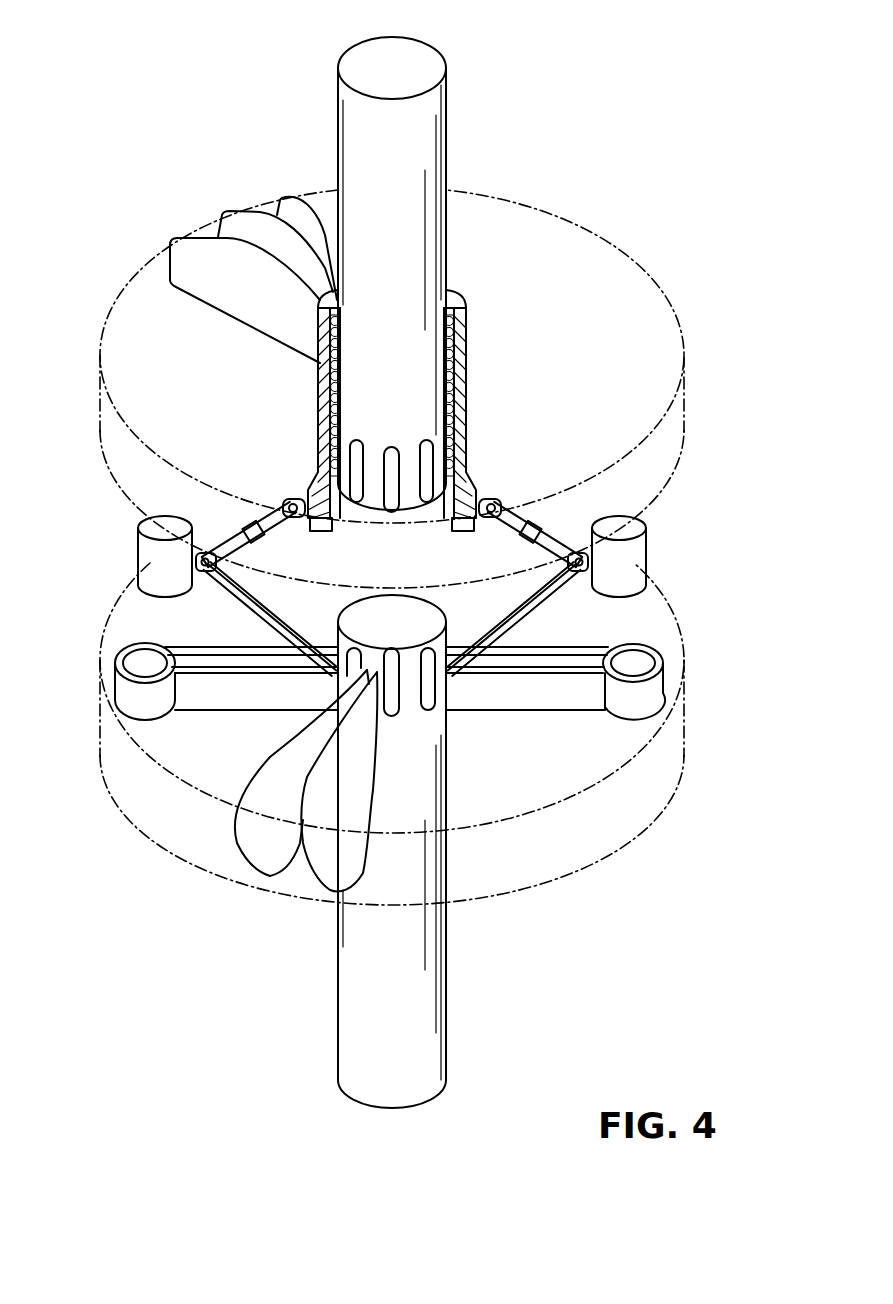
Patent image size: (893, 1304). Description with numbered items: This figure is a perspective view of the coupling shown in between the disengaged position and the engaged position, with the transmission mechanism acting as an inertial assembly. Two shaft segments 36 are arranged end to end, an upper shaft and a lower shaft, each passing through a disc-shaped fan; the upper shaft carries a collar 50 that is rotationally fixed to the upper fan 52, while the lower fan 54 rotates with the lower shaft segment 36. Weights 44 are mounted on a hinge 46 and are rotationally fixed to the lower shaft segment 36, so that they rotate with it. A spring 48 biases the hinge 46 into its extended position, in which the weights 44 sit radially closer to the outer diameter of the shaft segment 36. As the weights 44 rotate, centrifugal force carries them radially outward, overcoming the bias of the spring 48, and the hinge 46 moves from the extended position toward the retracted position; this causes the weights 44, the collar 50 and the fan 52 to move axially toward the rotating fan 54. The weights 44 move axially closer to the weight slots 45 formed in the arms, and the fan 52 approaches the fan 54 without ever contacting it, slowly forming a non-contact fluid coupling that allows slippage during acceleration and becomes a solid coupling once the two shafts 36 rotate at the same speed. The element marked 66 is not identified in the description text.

The shaft segment 36 is at (360, 127).
The weights 44 is at (147, 567).
The weight slots 45 is at (638, 663).
The hinge 46 is at (227, 533).
The spring 48 is at (463, 340).
The collar 50 is at (316, 333).
The fan 52 is at (673, 303).
The fan 54 is at (143, 827).
The cylinder weight 66 is at (668, 538).